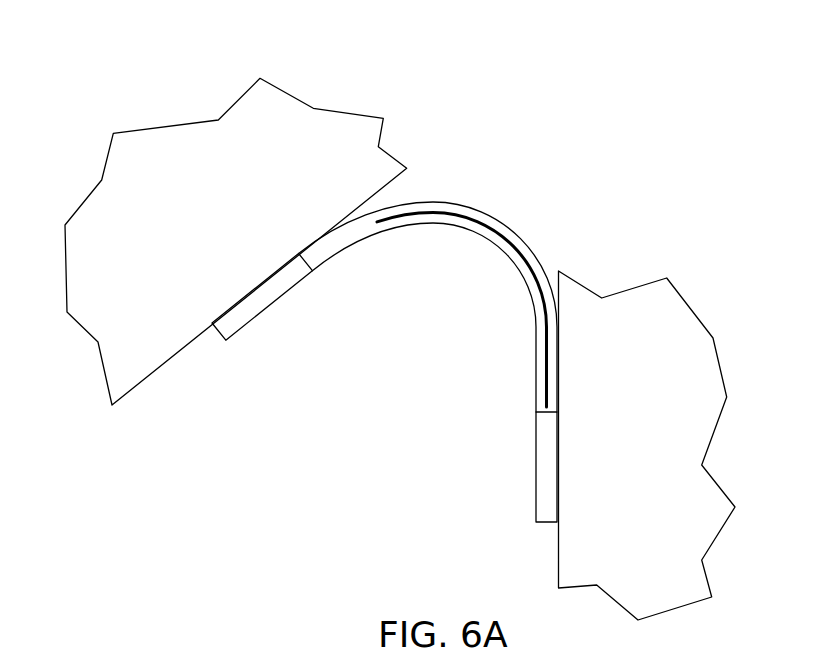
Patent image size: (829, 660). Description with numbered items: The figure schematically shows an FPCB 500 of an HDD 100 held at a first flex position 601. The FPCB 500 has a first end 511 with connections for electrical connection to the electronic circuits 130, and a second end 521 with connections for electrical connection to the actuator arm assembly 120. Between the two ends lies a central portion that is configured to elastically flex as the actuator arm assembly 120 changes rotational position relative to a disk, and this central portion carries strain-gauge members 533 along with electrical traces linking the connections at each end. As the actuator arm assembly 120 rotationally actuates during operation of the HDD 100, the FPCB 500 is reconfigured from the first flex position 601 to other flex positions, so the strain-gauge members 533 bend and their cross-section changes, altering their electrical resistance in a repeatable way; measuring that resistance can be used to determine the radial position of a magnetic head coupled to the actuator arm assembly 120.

The HDD 100 is at (122, 62).
The actuator arm assembly 120 is at (205, 201).
The electronic circuits 130 is at (655, 460).
The FPCB 500 is at (441, 197).
The first end 511 is at (537, 448).
The second end 521 is at (253, 318).
The strain-gauge members 533 is at (510, 248).
The first flex position 601 is at (625, 102).